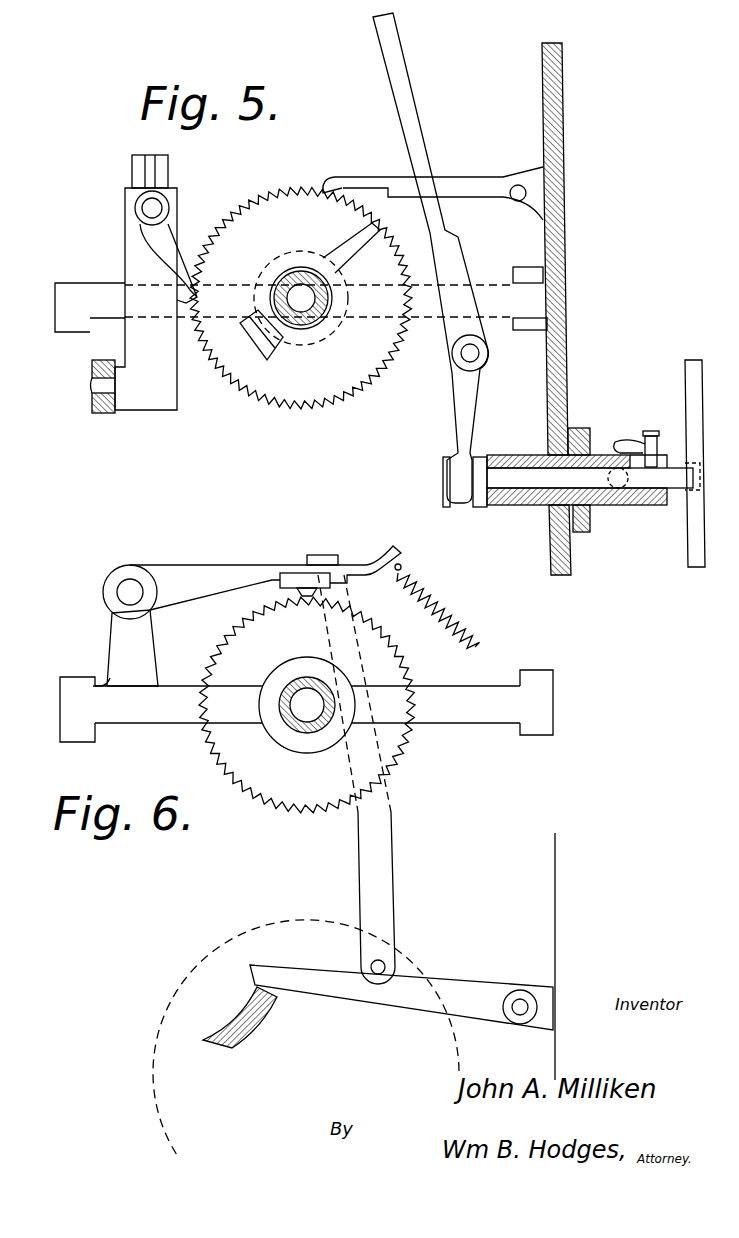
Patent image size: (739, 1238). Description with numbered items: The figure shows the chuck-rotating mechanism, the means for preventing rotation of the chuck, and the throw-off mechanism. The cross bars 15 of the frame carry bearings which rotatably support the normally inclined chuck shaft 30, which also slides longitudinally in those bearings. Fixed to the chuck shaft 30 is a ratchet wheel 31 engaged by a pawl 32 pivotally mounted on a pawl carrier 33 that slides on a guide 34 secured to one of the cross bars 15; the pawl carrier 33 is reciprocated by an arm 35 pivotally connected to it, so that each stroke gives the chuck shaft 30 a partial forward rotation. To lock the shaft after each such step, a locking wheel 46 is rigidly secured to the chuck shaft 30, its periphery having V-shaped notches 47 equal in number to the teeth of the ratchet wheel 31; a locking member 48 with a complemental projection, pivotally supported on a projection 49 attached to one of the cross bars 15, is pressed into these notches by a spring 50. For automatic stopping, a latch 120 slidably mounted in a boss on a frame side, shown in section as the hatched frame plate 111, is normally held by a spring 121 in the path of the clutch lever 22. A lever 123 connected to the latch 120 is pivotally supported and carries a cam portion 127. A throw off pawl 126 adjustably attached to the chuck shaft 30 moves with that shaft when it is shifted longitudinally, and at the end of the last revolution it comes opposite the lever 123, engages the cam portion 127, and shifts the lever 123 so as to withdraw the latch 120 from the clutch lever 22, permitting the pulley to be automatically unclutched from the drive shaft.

In FIG. 5, the upper cross bar 15 is at (55, 298).
In FIG. 6, the upper cross bar 15 is at (306, 706).
In FIG. 5, the clutch lever 22 is at (685, 380).
In FIG. 5, the chuck shaft 30 is at (313, 327).
In FIG. 6, the chuck shaft 30 is at (300, 728).
In FIG. 5, the ratchet wheel 31 is at (268, 185).
In FIG. 5, the pawl 32 is at (171, 263).
In FIG. 5, the pawl carrier 33 is at (126, 247).
In FIG. 5, the guide 34 is at (160, 178).
In FIG. 5, the arm 35 is at (97, 413).
In FIG. 6, the locking wheel 46 is at (307, 705).
In FIG. 6, the V-shaped notches 47 is at (232, 641).
In FIG. 6, the locking member 48 is at (231, 565).
In FIG. 6, the projection 49 is at (112, 628).
In FIG. 6, the spring 50 is at (452, 611).
In FIG. 5, the frame plate 111 is at (566, 143).
In FIG. 5, the latch 120 is at (682, 482).
In FIG. 5, the spring 121 is at (623, 438).
In FIG. 5, the lever 123 is at (457, 413).
In FIG. 5, the throw off pawl 126 is at (344, 231).
In FIG. 5, the cam portion 127 is at (411, 250).